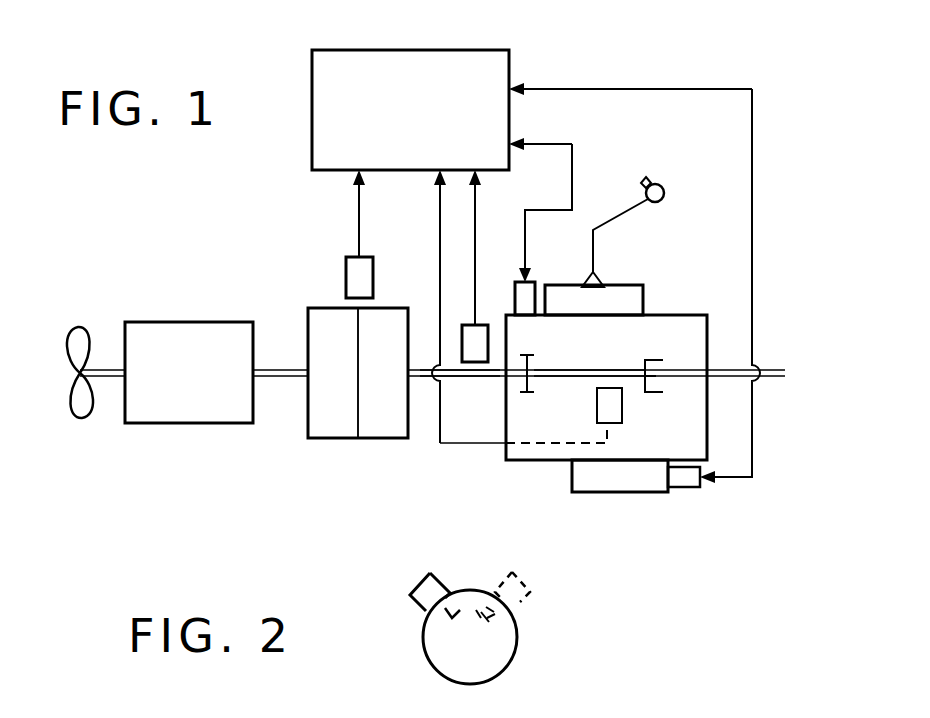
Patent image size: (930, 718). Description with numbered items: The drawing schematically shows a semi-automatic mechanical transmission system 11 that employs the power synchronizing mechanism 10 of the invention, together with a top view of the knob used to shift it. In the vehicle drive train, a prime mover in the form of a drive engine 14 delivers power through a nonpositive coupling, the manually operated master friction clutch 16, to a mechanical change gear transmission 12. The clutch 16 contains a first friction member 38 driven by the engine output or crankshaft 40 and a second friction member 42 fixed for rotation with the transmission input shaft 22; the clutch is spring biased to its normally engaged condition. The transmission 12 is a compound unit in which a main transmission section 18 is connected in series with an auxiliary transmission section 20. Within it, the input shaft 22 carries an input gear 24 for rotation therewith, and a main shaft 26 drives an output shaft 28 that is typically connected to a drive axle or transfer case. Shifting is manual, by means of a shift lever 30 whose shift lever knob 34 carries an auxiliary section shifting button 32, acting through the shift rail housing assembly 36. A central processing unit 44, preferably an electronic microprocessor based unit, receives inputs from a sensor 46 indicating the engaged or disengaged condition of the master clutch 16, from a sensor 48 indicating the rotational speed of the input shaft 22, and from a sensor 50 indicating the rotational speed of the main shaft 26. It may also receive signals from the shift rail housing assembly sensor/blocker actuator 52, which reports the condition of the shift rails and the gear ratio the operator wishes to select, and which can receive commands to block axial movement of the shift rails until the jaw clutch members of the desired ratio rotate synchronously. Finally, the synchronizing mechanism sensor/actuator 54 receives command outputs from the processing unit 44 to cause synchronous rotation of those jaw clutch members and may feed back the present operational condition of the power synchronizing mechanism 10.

In FIG. 1, the power synchronizing mechanism 10 is at (612, 518).
In FIG. 1, the system 11 is at (270, 206).
In FIG. 1, the mechanical change gear transmission 12 is at (664, 296).
In FIG. 1, the drive engine 14 is at (170, 312).
In FIG. 1, the master friction clutch 16 is at (333, 462).
In FIG. 1, the main transmission section 18 is at (563, 448).
In FIG. 1, the auxiliary transmission section 20 is at (682, 328).
In FIG. 1, the input shaft 22 is at (470, 378).
In FIG. 1, the input gear 24 is at (530, 352).
In FIG. 1, the main shaft 26 is at (572, 372).
In FIG. 1, the output shaft 28 is at (693, 368).
In FIG. 1, the shift lever 30 is at (624, 214).
In FIG. 1, the auxiliary section shifting button 32 is at (644, 180).
In FIG. 2, the auxiliary section shifting button 32 is at (418, 606).
In FIG. 1, the shift lever knob 34 is at (664, 187).
In FIG. 2, the shift lever knob 34 is at (498, 648).
In FIG. 1, the shift rail housing assembly 36 is at (620, 297).
In FIG. 1, the first friction member 38 is at (318, 398).
In FIG. 1, the crankshaft 40 is at (282, 368).
In FIG. 1, the second friction member 42 is at (392, 416).
In FIG. 1, the central processing unit 44 is at (368, 44).
In FIG. 1, the sensor 46 is at (346, 280).
In FIG. 1, the sensor 48 is at (465, 335).
In FIG. 1, the sensor 50 is at (622, 405).
In FIG. 1, the shift rail housing assembly sensor/blocker actuator 52 is at (515, 293).
In FIG. 1, the synchronizing mechanism sensor/actuator 54 is at (685, 481).